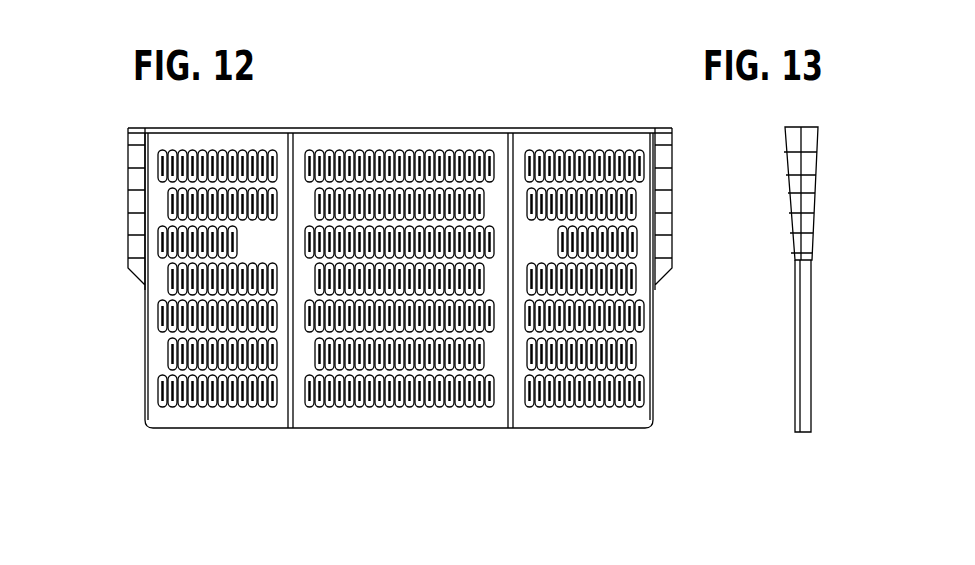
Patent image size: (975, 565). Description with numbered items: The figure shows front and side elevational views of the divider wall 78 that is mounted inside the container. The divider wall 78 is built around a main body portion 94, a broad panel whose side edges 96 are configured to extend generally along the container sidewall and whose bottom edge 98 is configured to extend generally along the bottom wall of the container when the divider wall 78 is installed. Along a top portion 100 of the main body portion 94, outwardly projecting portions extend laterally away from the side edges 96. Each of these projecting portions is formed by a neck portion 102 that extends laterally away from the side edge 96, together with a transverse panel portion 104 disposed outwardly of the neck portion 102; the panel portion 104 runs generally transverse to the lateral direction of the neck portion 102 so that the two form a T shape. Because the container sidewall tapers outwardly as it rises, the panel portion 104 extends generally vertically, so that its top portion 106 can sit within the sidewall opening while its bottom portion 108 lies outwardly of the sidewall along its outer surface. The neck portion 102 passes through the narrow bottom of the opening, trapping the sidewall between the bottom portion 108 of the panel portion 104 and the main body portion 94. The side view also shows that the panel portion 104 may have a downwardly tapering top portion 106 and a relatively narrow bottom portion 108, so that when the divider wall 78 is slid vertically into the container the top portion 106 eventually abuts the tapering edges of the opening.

In FIG. 12, the divider wall 78 is at (512, 82).
In FIG. 13, the divider wall 78 is at (850, 98).
In FIG. 12, the main body portion 94 is at (410, 335).
In FIG. 12, the side edges 96 is at (148, 343).
In FIG. 13, the side edges 96 is at (803, 333).
In FIG. 12, the bottom edge 98 is at (247, 425).
In FIG. 12, the top portion 100 is at (140, 190).
In FIG. 12, the neck portion 102 is at (138, 130).
In FIG. 12, the panel portion 104 is at (682, 128).
In FIG. 13, the panel portion 104 is at (790, 194).
In FIG. 13, the top portion 106 is at (812, 143).
In FIG. 13, the bottom portion 108 is at (810, 232).